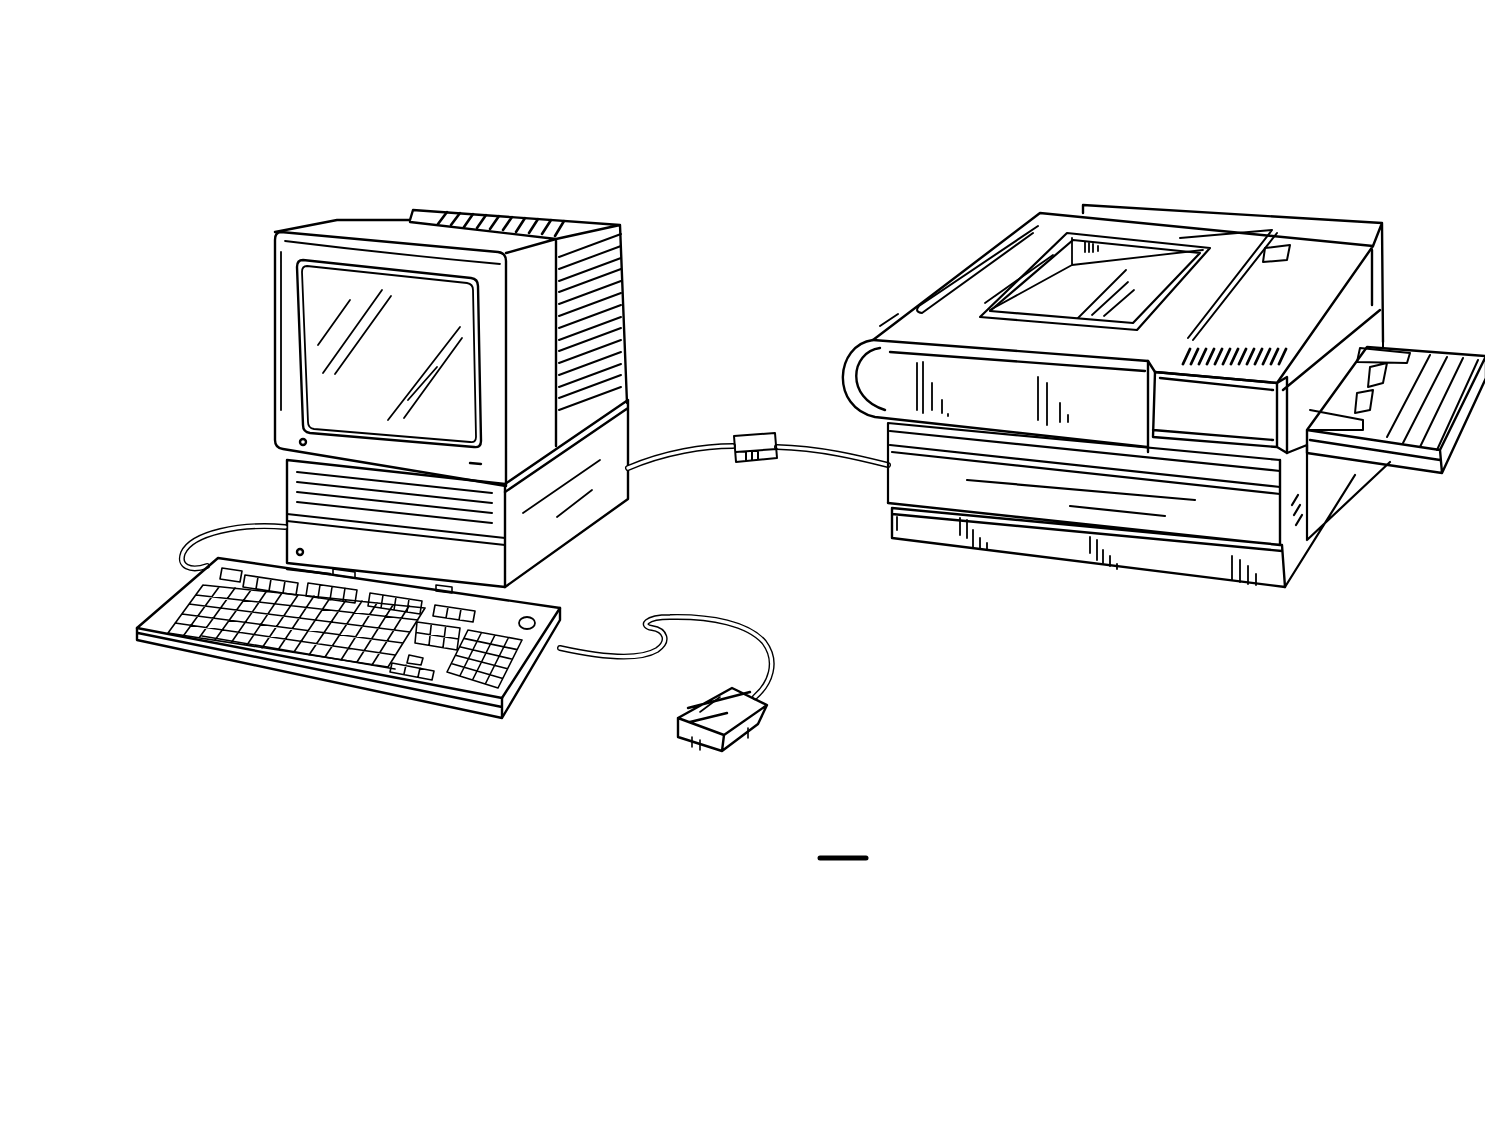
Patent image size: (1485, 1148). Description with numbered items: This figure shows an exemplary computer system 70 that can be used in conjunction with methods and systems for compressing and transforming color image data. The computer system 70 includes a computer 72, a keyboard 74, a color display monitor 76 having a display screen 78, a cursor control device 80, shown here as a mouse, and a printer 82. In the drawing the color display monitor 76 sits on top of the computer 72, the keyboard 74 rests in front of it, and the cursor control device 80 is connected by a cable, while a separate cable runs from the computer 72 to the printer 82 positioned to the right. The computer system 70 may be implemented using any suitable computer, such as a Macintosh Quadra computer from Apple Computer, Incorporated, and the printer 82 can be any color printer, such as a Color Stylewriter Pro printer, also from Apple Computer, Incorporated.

The computer system 70 is at (1157, 694).
The computer 72 is at (577, 523).
The keyboard 74 is at (330, 680).
The color display monitor 76 is at (481, 344).
The display screen 78 is at (337, 400).
The cursor control device 80 is at (753, 730).
The printer 82 is at (1042, 502).